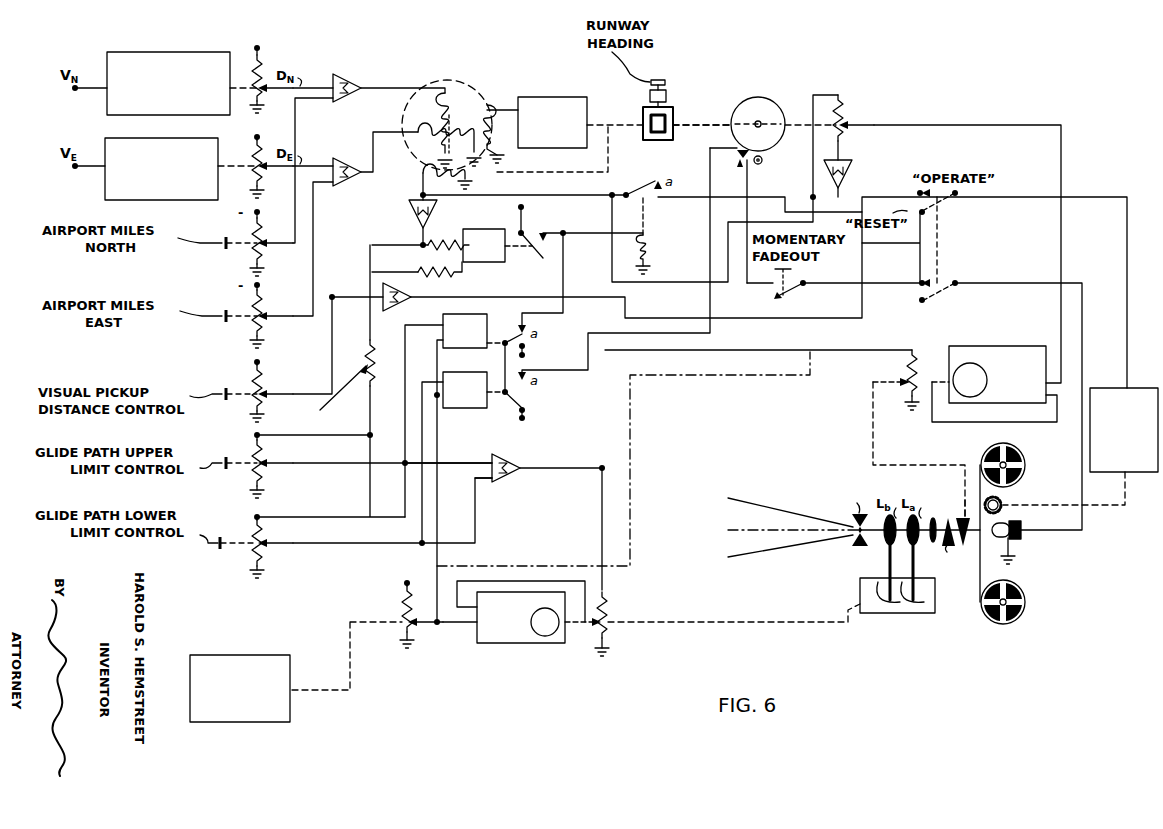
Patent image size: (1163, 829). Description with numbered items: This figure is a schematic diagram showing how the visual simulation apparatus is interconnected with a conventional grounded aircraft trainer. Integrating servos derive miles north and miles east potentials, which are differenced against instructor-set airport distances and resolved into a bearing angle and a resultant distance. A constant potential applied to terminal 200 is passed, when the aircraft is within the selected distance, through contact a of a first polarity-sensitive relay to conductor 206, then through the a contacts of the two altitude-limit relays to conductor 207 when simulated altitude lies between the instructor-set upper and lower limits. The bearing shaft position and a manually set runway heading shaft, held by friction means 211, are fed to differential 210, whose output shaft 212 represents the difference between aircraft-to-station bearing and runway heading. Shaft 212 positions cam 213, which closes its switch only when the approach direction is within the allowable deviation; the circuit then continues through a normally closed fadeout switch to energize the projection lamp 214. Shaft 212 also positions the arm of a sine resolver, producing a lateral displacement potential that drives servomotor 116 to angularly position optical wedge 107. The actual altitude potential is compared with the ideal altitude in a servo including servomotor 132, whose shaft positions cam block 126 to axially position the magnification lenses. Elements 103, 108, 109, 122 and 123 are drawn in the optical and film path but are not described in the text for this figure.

The sprocket 103 is at (1002, 504).
The optical wedge 107 is at (966, 485).
The prism 108 is at (927, 517).
The shutter drive connection 109 is at (873, 418).
The servomotor 116 is at (997, 374).
The lens arm 122 is at (918, 572).
The lens arm 123 is at (879, 564).
The cam block 126 is at (872, 613).
The servomotor 132 is at (521, 617).
The terminal 200 is at (524, 212).
The conductor 206 is at (562, 288).
The conductor 207 is at (612, 324).
The differential 210 is at (647, 138).
The friction means 211 is at (667, 94).
The output shaft 212 is at (722, 121).
The cam 213 is at (772, 88).
The lamp 214 is at (1022, 539).